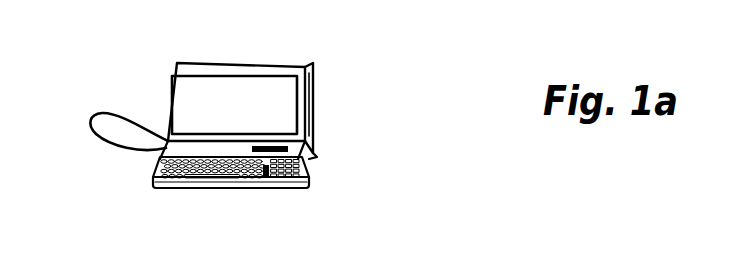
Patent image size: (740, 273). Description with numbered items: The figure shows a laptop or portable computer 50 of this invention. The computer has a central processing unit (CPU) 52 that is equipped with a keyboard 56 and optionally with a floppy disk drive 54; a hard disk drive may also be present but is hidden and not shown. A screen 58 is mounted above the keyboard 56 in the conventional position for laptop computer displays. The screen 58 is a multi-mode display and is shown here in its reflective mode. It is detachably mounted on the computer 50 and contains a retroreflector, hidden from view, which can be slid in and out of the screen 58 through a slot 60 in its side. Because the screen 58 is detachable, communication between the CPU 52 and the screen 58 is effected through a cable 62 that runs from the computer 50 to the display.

The laptop or portable computer 50 is at (120, 85).
The central processing unit 52 is at (313, 153).
The floppy disk drive 54 is at (263, 150).
The keyboard 56 is at (152, 187).
The screen 58 is at (268, 63).
The slot 60 is at (312, 95).
The cable 62 is at (102, 138).